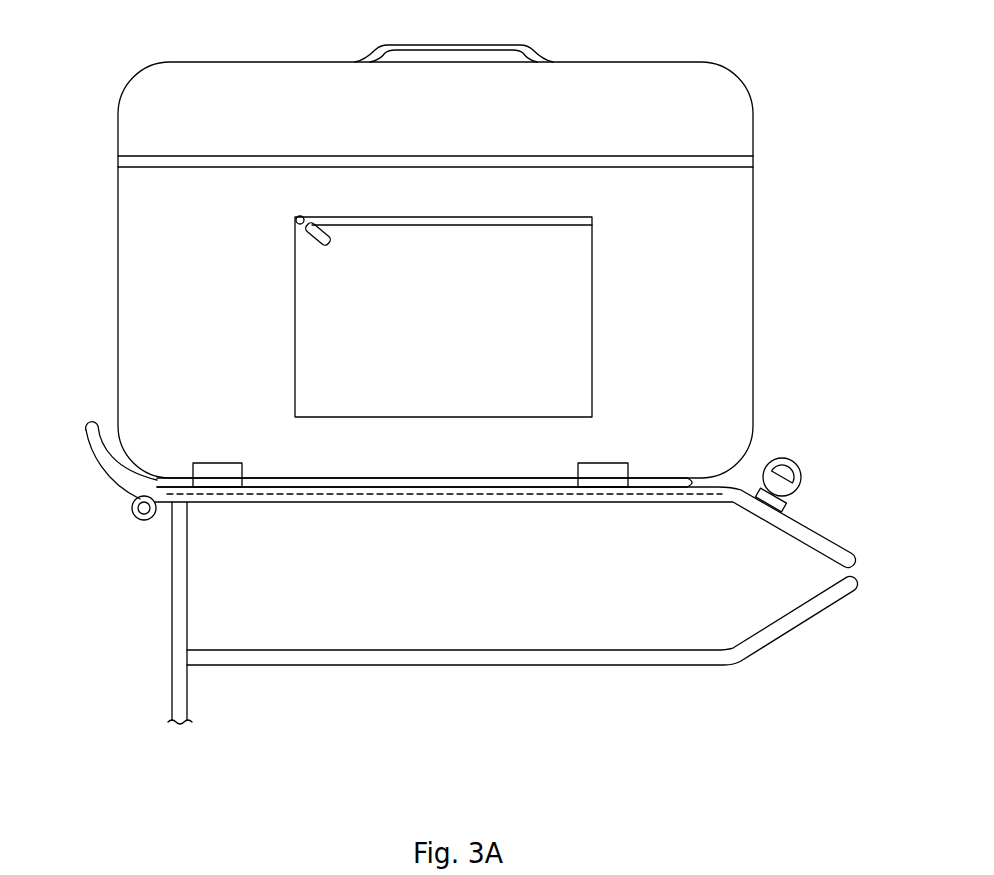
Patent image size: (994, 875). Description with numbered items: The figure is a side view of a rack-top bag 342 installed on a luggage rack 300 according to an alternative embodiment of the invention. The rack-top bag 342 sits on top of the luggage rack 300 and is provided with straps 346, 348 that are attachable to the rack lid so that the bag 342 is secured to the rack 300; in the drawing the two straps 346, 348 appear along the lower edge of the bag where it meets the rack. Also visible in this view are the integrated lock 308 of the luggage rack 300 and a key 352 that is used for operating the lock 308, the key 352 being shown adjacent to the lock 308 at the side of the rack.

The luggage rack 300 is at (117, 475).
The integrated lock 308 is at (775, 525).
The rack-top bag 342 is at (713, 107).
The strap 346 is at (630, 472).
The strap 348 is at (207, 465).
The key 352 is at (783, 460).